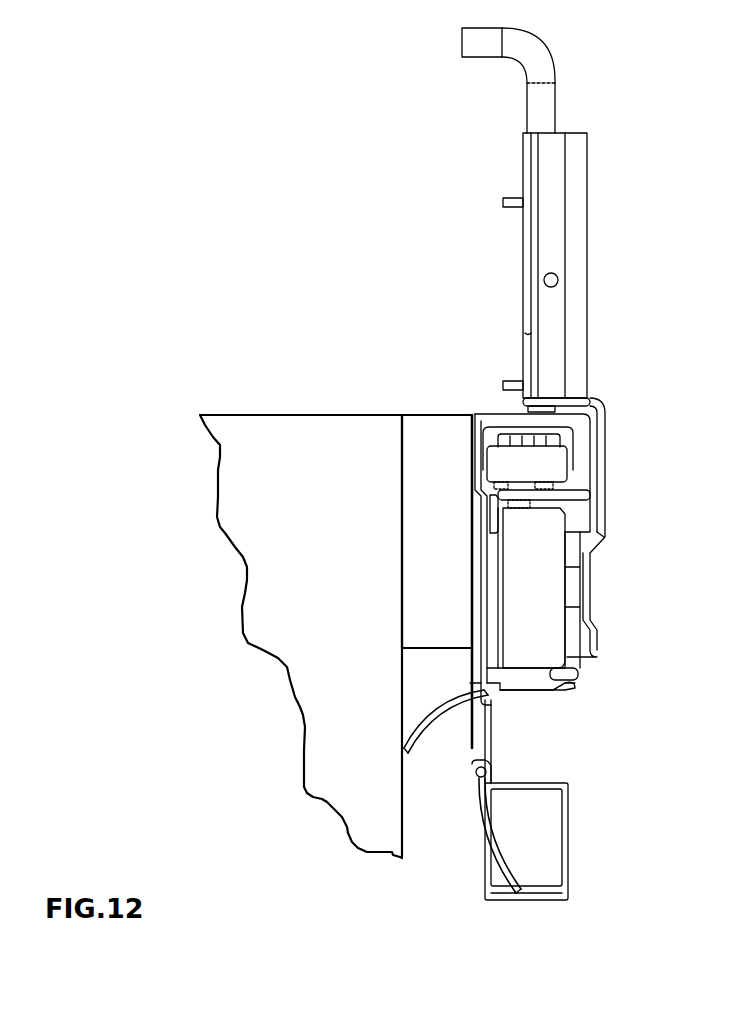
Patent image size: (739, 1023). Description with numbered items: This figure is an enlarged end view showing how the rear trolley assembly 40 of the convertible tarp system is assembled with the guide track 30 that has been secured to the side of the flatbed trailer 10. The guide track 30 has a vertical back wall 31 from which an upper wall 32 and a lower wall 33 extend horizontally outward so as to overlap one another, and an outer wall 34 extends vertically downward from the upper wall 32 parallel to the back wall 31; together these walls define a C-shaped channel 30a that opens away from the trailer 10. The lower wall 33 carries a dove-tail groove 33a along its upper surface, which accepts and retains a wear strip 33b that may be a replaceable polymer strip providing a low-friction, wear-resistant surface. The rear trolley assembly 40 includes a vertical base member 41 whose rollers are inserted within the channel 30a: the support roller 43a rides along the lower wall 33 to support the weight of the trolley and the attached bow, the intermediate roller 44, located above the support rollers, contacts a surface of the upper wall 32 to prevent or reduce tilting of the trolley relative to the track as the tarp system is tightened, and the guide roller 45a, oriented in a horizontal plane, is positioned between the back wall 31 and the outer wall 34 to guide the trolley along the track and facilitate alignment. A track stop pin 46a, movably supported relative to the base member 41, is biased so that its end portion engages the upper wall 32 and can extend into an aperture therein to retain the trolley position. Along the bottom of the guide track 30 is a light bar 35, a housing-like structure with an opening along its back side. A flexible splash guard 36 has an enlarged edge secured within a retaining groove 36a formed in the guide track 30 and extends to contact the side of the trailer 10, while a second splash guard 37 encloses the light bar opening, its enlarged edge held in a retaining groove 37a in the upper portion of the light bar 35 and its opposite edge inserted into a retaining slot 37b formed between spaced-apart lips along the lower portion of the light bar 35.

The flatbed trailer 10 is at (270, 437).
The guide track 30 is at (474, 391).
The channel 30a is at (575, 542).
The back wall 31 is at (480, 548).
The upper wall 32 is at (517, 422).
The lower wall 33 is at (527, 685).
The groove 33a is at (547, 678).
The wear strip 33b is at (547, 675).
The outer wall 34 is at (570, 444).
The light bar 35 is at (565, 848).
The splash guard 36 is at (437, 718).
The retaining groove 36a is at (495, 695).
The second splash guard 37 is at (487, 843).
The retaining groove 37a is at (487, 770).
The retaining slot 37b is at (515, 893).
The rear trolley assembly 40 is at (539, 215).
The base member 41 is at (561, 310).
The support roller 43a is at (572, 657).
The intermediate roller 44 is at (567, 436).
The guide roller 45a is at (550, 463).
The pin 46a is at (540, 102).